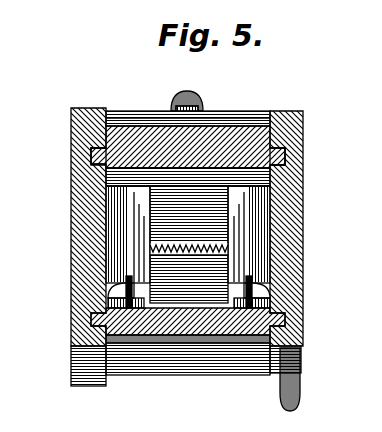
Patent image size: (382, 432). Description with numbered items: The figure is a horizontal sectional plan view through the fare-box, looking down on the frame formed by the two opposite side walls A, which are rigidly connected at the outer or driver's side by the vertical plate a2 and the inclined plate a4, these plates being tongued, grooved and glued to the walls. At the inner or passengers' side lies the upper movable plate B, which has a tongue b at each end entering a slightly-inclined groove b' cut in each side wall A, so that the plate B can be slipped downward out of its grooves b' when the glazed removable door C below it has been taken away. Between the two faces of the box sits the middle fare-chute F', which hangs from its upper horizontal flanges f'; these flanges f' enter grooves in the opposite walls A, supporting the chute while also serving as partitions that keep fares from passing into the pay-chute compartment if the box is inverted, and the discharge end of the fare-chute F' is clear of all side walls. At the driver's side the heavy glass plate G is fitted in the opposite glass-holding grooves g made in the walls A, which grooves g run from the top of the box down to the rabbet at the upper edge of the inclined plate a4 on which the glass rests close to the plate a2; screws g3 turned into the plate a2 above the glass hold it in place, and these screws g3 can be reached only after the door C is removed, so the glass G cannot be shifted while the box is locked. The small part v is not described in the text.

The side wall A is at (172, 247).
The upper movable plate B is at (213, 110).
The tongue b is at (187, 155).
The groove b' is at (183, 157).
The glazed removable door C is at (160, 107).
The fare-chute F' is at (189, 244).
The screw g3 is at (189, 264).
The upper horizontal flange f' is at (188, 234).
The glass-holding groove g is at (98, 287).
The heavy glass plate G is at (93, 296).
The vertical plate a2 is at (157, 330).
The inclined plate a4 is at (192, 353).
The pendant v is at (296, 375).